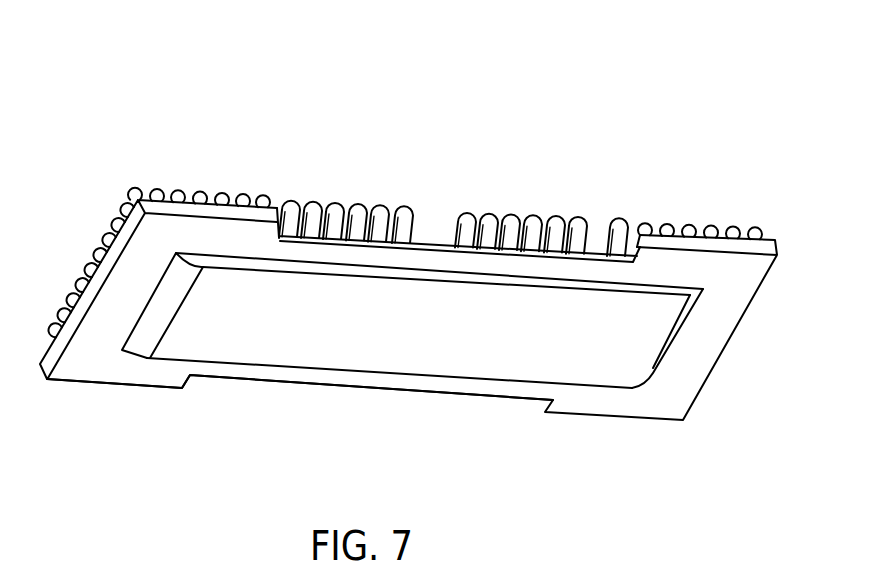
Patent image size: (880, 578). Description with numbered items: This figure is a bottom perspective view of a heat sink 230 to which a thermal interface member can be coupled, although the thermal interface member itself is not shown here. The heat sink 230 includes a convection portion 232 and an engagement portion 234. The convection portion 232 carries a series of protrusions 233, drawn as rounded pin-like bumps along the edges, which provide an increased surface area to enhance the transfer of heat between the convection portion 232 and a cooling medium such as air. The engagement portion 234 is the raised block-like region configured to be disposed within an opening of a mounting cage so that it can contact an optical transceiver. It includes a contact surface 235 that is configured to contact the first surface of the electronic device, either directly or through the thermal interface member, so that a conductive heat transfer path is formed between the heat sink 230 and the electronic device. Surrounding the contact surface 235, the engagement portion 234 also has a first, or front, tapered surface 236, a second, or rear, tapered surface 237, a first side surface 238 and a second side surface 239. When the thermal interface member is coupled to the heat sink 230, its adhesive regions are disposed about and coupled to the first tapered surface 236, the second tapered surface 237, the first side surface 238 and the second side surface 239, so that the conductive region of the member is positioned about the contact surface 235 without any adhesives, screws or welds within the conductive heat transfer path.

The heat sink 230 is at (167, 70).
The convection portion 232 is at (613, 222).
The protrusions 233 is at (554, 224).
The engagement portion 234 is at (450, 307).
The contact surface 235 is at (480, 365).
The first tapered surface 236 is at (148, 335).
The second tapered surface 237 is at (652, 377).
The first side surface 238 is at (302, 267).
The second side surface 239 is at (267, 370).